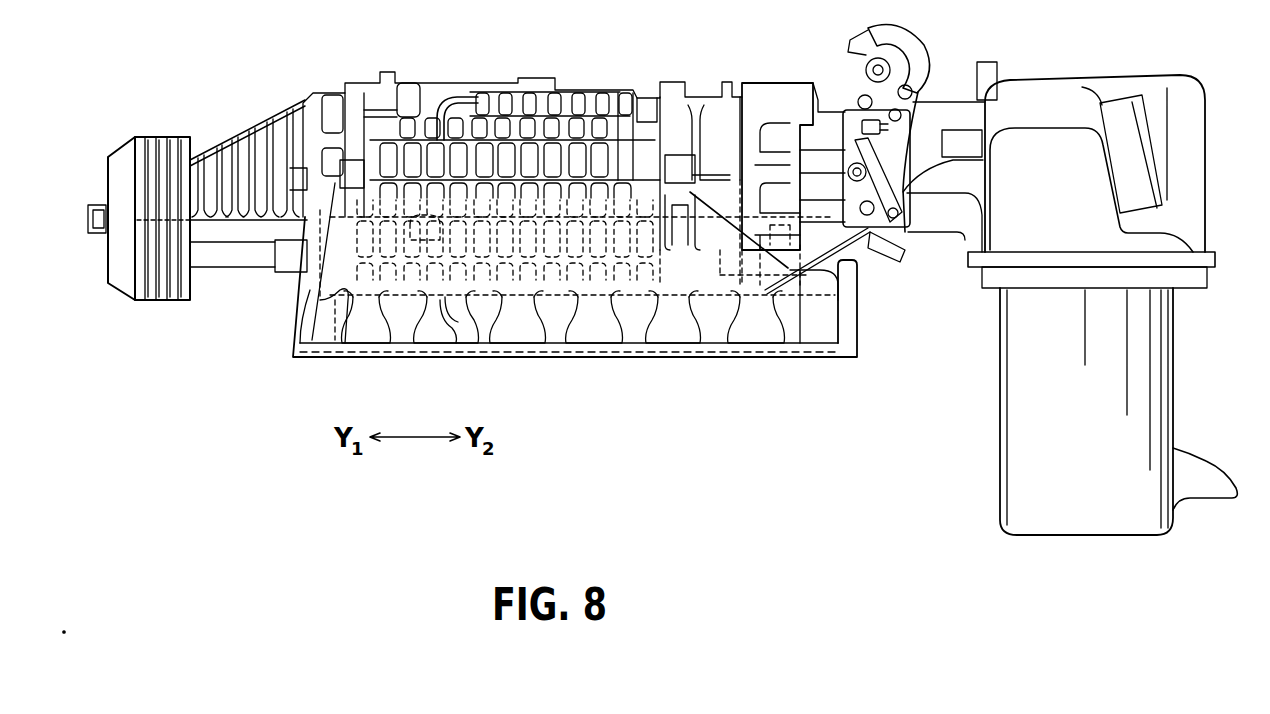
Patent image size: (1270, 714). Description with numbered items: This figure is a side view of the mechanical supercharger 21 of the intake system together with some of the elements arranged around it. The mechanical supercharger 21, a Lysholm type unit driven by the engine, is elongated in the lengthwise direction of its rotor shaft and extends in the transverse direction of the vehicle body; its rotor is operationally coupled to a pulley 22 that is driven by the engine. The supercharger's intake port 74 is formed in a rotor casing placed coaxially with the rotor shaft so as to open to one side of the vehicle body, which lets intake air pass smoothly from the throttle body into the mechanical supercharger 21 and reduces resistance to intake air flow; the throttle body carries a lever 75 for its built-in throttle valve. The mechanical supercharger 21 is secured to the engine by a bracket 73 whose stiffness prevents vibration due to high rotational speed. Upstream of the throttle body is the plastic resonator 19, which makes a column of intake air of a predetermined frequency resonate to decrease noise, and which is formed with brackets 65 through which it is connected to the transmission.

The resonator 19 is at (1167, 68).
The mechanical supercharger 21 is at (620, 96).
The pulley 22 is at (165, 137).
The brackets 65 is at (1205, 468).
The bracket 73 is at (622, 357).
The intake port 74 is at (770, 84).
The lever 75 is at (920, 57).